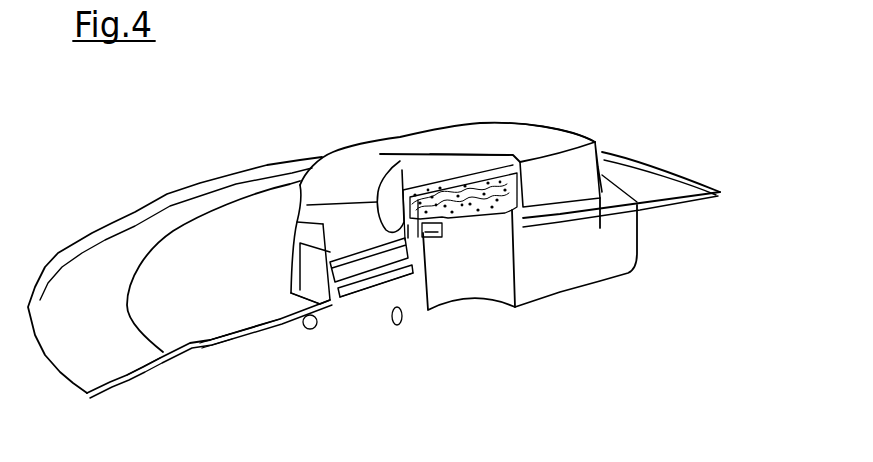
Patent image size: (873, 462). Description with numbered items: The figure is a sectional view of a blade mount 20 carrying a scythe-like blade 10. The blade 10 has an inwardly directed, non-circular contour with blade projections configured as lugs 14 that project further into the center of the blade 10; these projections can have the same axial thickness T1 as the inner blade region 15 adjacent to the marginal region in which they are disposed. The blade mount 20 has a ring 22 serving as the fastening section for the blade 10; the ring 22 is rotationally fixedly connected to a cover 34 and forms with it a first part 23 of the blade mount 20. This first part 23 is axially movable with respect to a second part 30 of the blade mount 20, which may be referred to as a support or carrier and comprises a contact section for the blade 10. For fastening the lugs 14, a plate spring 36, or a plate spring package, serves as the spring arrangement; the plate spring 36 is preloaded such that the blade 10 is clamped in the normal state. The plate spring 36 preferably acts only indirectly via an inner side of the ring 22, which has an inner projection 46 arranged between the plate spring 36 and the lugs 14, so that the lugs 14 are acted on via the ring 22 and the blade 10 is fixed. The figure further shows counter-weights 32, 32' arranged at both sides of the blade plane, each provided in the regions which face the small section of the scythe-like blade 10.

The scythe-like blade 10 is at (170, 327).
The blade projection 14 is at (310, 320).
The inner blade region 15 is at (240, 317).
The blade mount 20 is at (546, 118).
The ring 22 is at (604, 238).
The first part 23 is at (323, 224).
The second part 30 is at (378, 300).
The counter-weight 32 is at (446, 181).
The counter-weight 32' is at (594, 245).
The cover 34 is at (490, 137).
The plate spring 36 is at (365, 283).
The inner projection 46 is at (291, 298).
The axial thickness T1 is at (223, 366).